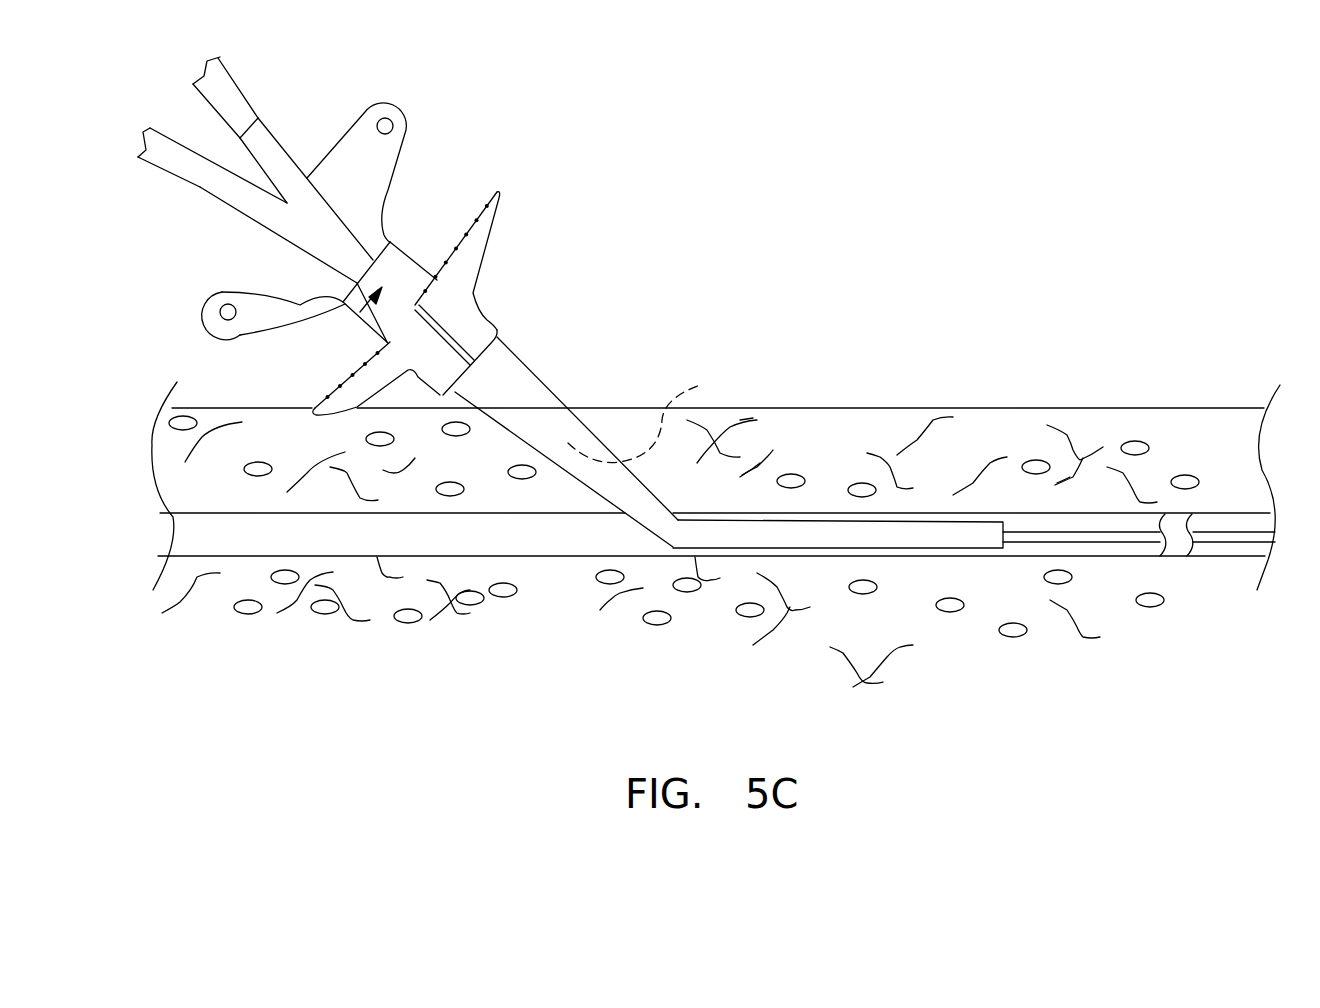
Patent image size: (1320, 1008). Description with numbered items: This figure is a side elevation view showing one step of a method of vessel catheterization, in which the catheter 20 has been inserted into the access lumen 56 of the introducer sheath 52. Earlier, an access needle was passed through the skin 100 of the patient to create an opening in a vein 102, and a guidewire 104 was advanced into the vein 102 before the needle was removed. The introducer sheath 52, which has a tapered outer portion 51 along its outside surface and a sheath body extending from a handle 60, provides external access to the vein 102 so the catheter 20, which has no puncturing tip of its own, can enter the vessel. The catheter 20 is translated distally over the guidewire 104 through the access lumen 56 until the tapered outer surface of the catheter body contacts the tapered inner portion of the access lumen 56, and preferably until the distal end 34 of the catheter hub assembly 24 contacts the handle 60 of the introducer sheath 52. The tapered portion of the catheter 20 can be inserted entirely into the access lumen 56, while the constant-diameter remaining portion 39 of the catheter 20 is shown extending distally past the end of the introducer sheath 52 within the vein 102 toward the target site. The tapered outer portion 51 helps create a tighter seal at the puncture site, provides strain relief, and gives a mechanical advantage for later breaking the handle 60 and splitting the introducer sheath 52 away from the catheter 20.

The catheter 20 is at (450, 110).
The hub assembly 24 is at (357, 300).
The distal end of catheter hub assembly 34 is at (421, 303).
The handle 60 is at (498, 198).
The tapered outer portion 51 is at (555, 422).
The access lumen 56 is at (653, 413).
The skin 100 is at (822, 472).
The vein 102 is at (923, 512).
The introducer sheath 52 is at (815, 535).
The remaining portion of catheter body 39 is at (1117, 537).
The guidewire 104 is at (1173, 537).